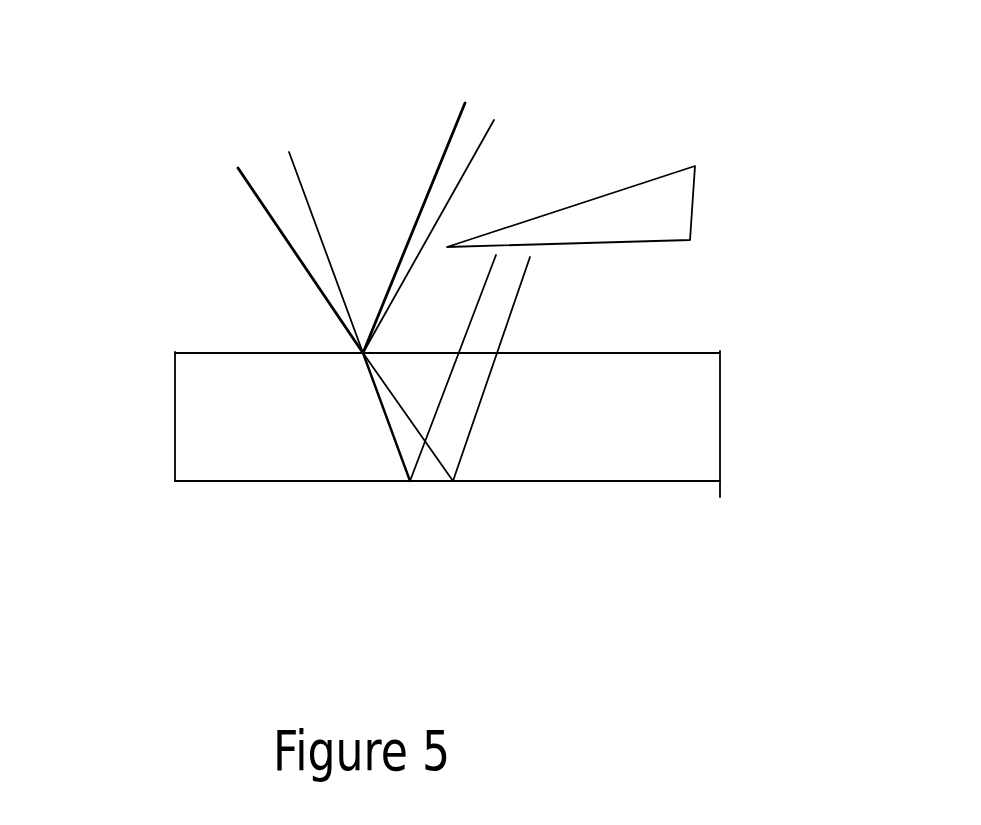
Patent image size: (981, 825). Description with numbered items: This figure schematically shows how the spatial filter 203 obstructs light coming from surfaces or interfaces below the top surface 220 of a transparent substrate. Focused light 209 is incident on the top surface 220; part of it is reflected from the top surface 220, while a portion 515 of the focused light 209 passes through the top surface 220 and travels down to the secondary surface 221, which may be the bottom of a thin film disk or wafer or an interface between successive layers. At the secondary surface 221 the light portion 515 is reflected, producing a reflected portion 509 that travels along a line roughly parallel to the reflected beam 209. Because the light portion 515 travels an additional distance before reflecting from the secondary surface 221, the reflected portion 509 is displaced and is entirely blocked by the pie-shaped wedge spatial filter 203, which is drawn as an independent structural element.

The spatial filter 203 is at (705, 211).
The focused light 209 is at (247, 208).
The top surface 220 is at (197, 345).
The secondary surface 221 is at (246, 493).
The reflected portion 509 is at (487, 403).
The light portion 515 is at (387, 442).